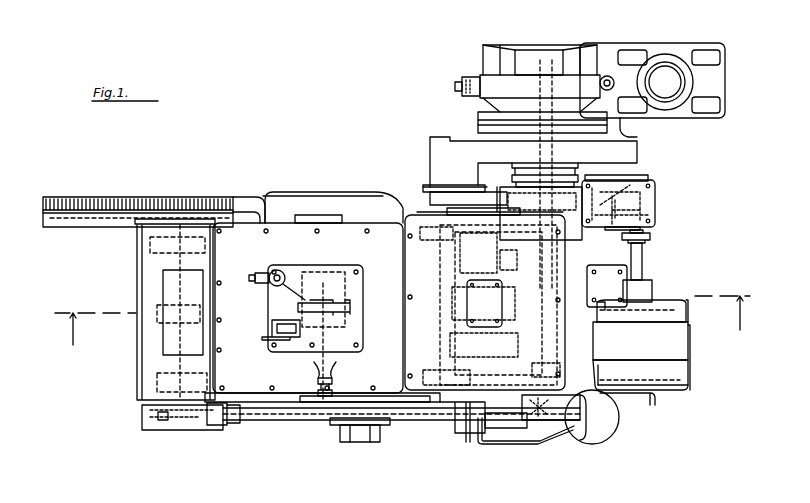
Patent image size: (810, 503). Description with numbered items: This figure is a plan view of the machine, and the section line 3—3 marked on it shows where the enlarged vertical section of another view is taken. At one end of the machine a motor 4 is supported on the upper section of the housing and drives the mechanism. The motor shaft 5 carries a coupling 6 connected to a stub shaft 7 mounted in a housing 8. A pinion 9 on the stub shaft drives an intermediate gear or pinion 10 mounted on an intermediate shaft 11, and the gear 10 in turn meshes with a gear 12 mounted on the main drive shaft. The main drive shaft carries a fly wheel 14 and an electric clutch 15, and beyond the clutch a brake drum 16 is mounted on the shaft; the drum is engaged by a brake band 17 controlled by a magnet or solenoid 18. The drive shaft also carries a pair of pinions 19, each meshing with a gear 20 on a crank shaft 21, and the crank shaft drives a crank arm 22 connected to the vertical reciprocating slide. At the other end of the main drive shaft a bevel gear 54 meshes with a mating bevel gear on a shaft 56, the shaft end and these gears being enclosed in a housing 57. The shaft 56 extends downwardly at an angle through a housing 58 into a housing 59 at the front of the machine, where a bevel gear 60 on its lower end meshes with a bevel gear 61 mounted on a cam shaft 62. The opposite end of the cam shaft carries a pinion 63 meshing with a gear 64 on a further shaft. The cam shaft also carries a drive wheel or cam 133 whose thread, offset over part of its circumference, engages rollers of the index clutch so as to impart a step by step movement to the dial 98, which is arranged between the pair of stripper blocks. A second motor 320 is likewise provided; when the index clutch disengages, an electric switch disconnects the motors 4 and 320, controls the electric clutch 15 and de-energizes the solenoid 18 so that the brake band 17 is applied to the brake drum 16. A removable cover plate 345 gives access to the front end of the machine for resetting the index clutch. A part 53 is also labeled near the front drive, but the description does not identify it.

The section line 3— 3 is at (402, 320).
The motor 4 is at (677, 345).
The motor shaft 5 is at (642, 265).
The coupling 6 is at (651, 237).
The stub shaft 7 is at (655, 222).
The housing 8 is at (655, 182).
The pinion 9 is at (655, 196).
The intermediate gear 10 is at (623, 178).
The intermediate shaft 11 is at (588, 190).
The gear 12 is at (576, 229).
The fly wheel 14 is at (638, 141).
The electric clutch 15 is at (478, 114).
The brake drum 16 is at (490, 50).
The brake band 17 is at (502, 82).
The solenoid 18 is at (662, 53).
The pinions 19 is at (565, 254).
The gear 20 is at (430, 240).
The crank shaft 21 is at (465, 248).
The crank arm 22 is at (452, 297).
The drum 53 is at (571, 440).
The bevel gear 54 is at (543, 433).
The shaft 56 is at (425, 412).
The housing 57 is at (538, 422).
The housing 58 is at (258, 423).
The housing 59 is at (178, 428).
The bevel gear 60 is at (213, 428).
The bevel gear 61 is at (158, 427).
The cam shaft 62 is at (147, 363).
The pinion 63 is at (198, 195).
The gear 64 is at (133, 223).
The dial 98 is at (345, 326).
The cam 133 is at (157, 308).
The motor 320 is at (360, 437).
The removable cover plate 345 is at (200, 338).